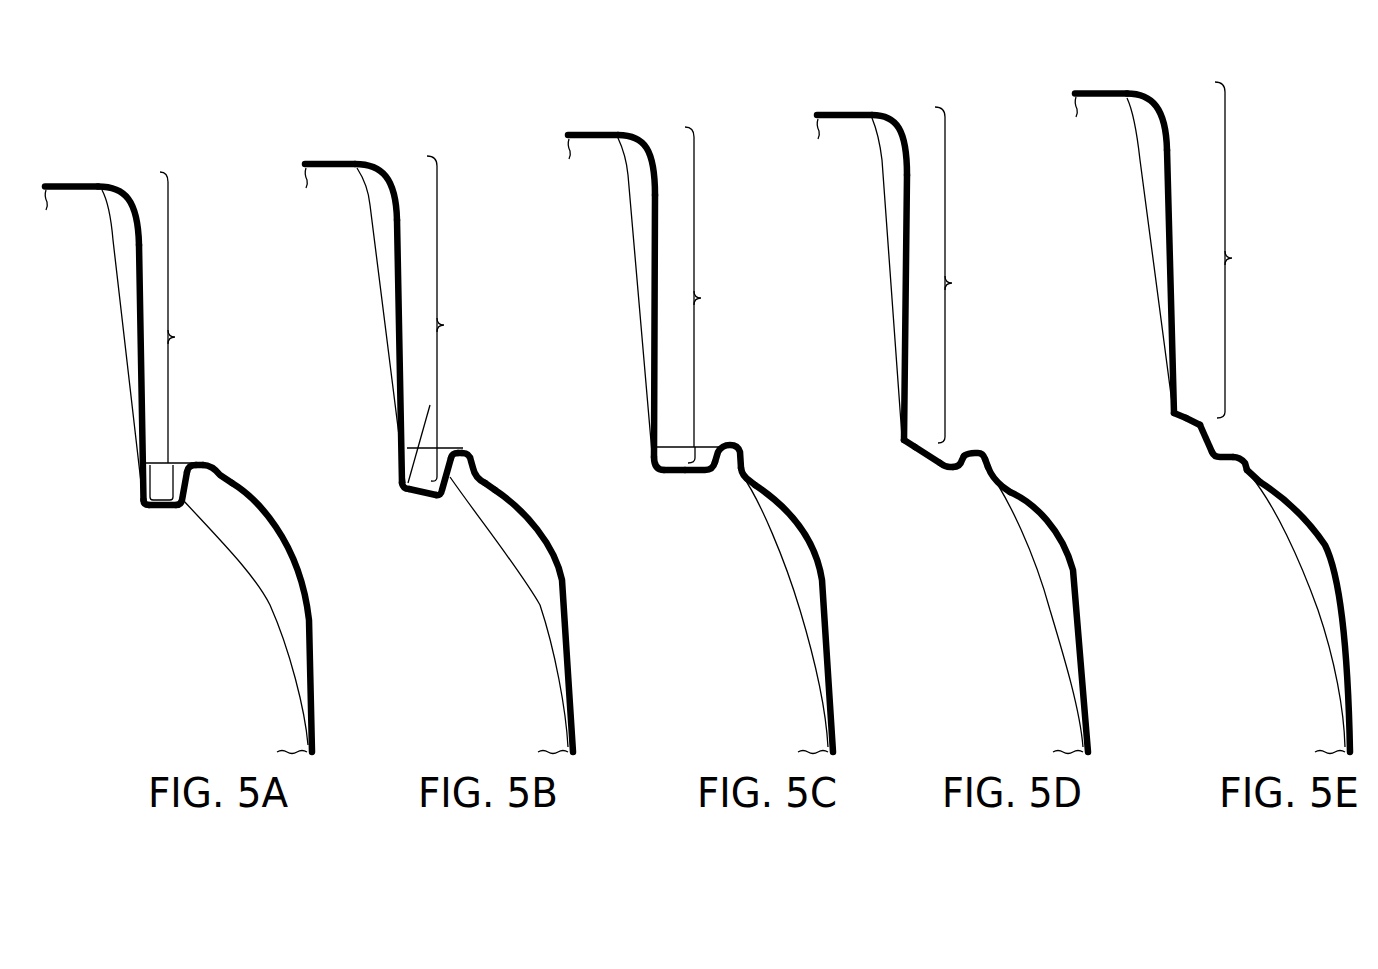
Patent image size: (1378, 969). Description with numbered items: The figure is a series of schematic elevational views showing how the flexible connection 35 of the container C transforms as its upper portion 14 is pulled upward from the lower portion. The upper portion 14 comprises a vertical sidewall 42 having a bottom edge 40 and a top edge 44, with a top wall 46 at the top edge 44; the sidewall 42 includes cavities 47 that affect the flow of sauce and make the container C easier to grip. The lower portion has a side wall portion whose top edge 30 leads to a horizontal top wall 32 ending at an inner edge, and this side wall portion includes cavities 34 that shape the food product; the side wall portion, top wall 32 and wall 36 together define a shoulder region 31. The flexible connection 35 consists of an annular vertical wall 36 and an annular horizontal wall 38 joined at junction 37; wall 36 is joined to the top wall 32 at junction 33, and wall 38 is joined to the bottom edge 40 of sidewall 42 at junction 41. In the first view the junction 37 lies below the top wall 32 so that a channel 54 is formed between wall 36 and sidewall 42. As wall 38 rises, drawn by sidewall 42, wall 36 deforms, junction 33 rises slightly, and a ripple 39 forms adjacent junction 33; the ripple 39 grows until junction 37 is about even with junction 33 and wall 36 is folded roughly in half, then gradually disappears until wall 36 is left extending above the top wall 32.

In FIG. 5A, the upper portion 14 is at (185, 317).
In FIG. 5B, the upper portion 14 is at (452, 318).
In FIG. 5C, the upper portion 14 is at (709, 295).
In FIG. 5D, the upper portion 14 is at (960, 275).
In FIG. 5E, the upper portion 14 is at (1241, 250).
In FIG. 5A, the container C is at (180, 253).
In FIG. 5B, the container C is at (445, 238).
In FIG. 5C, the container C is at (708, 228).
In FIG. 5D, the container C is at (958, 225).
In FIG. 5E, the container C is at (1245, 195).
In FIG. 5A, the top edge 30 is at (218, 477).
In FIG. 5B, the top edge 30 is at (477, 467).
In FIG. 5C, the top edge 30 is at (743, 457).
In FIG. 5D, the top edge 30 is at (990, 463).
In FIG. 5E, the top edge 30 is at (1247, 465).
In FIG. 5A, the shoulder region 31 is at (200, 487).
In FIG. 5A, the top wall 32 is at (207, 463).
In FIG. 5B, the top wall 32 is at (465, 450).
In FIG. 5C, the top wall 32 is at (727, 445).
In FIG. 5D, the top wall 32 is at (985, 450).
In FIG. 5E, the top wall 32 is at (1235, 453).
In FIG. 5A, the junction 33 is at (193, 462).
In FIG. 5B, the junction 33 is at (458, 440).
In FIG. 5A, the cavities 34 is at (287, 520).
In FIG. 5B, the cavities 34 is at (567, 563).
In FIG. 5C, the cavities 34 is at (820, 543).
In FIG. 5D, the cavities 34 is at (1075, 540).
In FIG. 5E, the cavities 34 is at (1317, 520).
In FIG. 5A, the flexible connection 35 is at (165, 525).
In FIG. 5A, the annular vertical wall 36 is at (187, 500).
In FIG. 5B, the annular vertical wall 36 is at (450, 477).
In FIG. 5C, the annular vertical wall 36 is at (707, 463).
In FIG. 5D, the annular vertical wall 36 is at (952, 455).
In FIG. 5E, the annular vertical wall 36 is at (1210, 433).
In FIG. 5A, the junction 37 is at (177, 503).
In FIG. 5B, the junction 37 is at (445, 487).
In FIG. 5C, the junction 37 is at (680, 473).
In FIG. 5D, the junction 37 is at (930, 447).
In FIG. 5E, the junction 37 is at (1202, 423).
In FIG. 5A, the annular horizontal wall 38 is at (157, 510).
In FIG. 5B, the annular horizontal wall 38 is at (425, 492).
In FIG. 5C, the annular horizontal wall 38 is at (665, 467).
In FIG. 5D, the annular horizontal wall 38 is at (915, 448).
In FIG. 5E, the annular horizontal wall 38 is at (1188, 417).
In FIG. 5B, the ripple 39 is at (475, 455).
In FIG. 5C, the ripple 39 is at (747, 438).
In FIG. 5D, the ripple 39 is at (982, 448).
In FIG. 5A, the bottom edge 40 is at (143, 503).
In FIG. 5B, the bottom edge 40 is at (405, 483).
In FIG. 5C, the bottom edge 40 is at (650, 457).
In FIG. 5D, the bottom edge 40 is at (897, 440).
In FIG. 5E, the bottom edge 40 is at (1173, 413).
In FIG. 5A, the junction 41 is at (163, 473).
In FIG. 5B, the junction 41 is at (432, 450).
In FIG. 5C, the junction 41 is at (658, 452).
In FIG. 5D, the junction 41 is at (908, 433).
In FIG. 5E, the junction 41 is at (1185, 405).
In FIG. 5A, the vertical sidewall 42 is at (125, 348).
In FIG. 5B, the vertical sidewall 42 is at (385, 320).
In FIG. 5C, the vertical sidewall 42 is at (637, 283).
In FIG. 5D, the vertical sidewall 42 is at (885, 247).
In FIG. 5E, the vertical sidewall 42 is at (1147, 223).
In FIG. 5A, the top edge 44 is at (118, 190).
In FIG. 5B, the top edge 44 is at (370, 165).
In FIG. 5C, the top edge 44 is at (643, 142).
In FIG. 5D, the top edge 44 is at (890, 117).
In FIG. 5E, the top edge 44 is at (1147, 98).
In FIG. 5A, the top wall 46 is at (63, 182).
In FIG. 5B, the top wall 46 is at (330, 160).
In FIG. 5C, the top wall 46 is at (588, 130).
In FIG. 5D, the top wall 46 is at (833, 110).
In FIG. 5E, the top wall 46 is at (1092, 90).
In FIG. 5A, the cavities 47 is at (140, 237).
In FIG. 5B, the cavities 47 is at (400, 222).
In FIG. 5C, the cavities 47 is at (662, 200).
In FIG. 5D, the cavities 47 is at (915, 192).
In FIG. 5E, the cavities 47 is at (1172, 173).
In FIG. 5A, the channel 54 is at (167, 502).
In FIG. 5B, the channel 54 is at (442, 447).